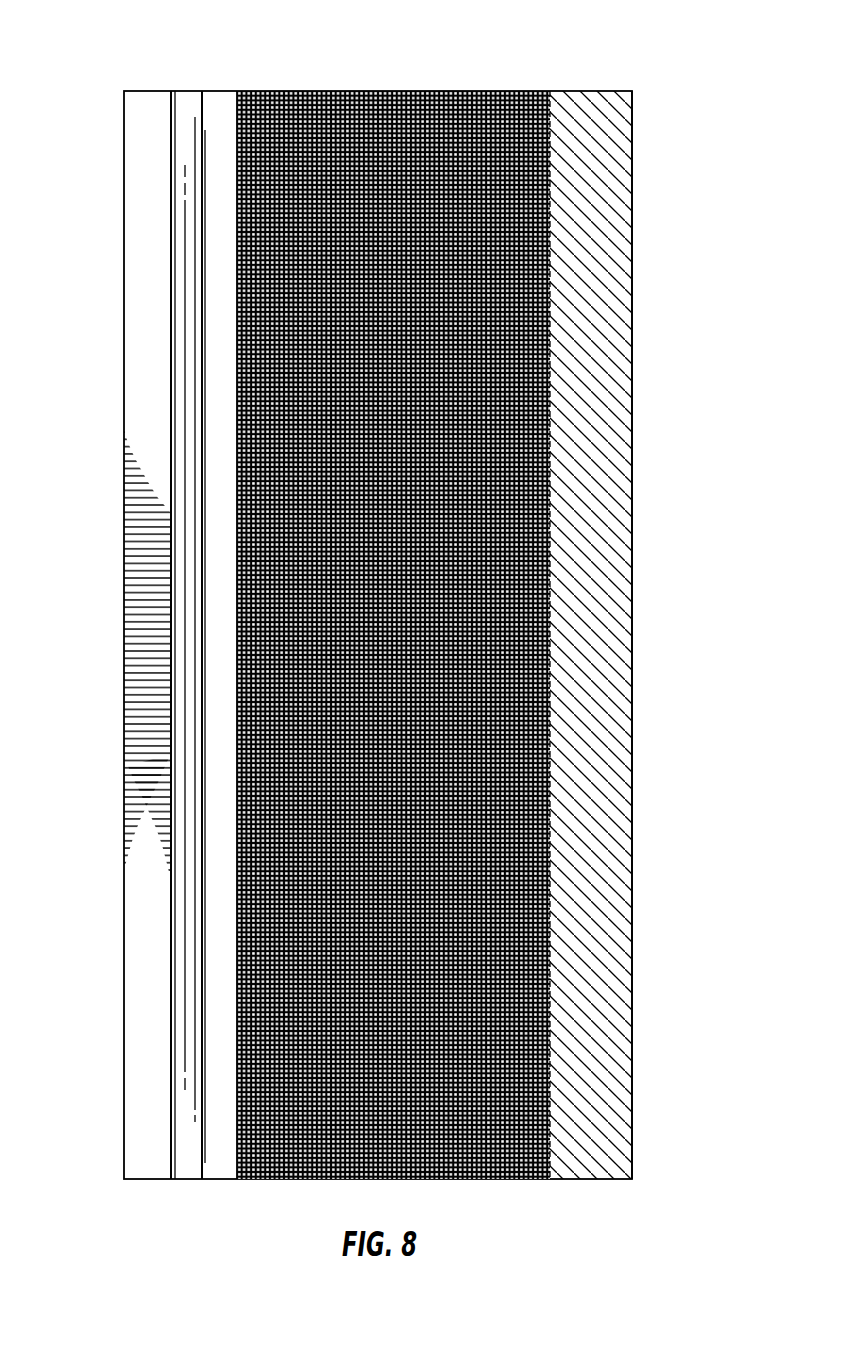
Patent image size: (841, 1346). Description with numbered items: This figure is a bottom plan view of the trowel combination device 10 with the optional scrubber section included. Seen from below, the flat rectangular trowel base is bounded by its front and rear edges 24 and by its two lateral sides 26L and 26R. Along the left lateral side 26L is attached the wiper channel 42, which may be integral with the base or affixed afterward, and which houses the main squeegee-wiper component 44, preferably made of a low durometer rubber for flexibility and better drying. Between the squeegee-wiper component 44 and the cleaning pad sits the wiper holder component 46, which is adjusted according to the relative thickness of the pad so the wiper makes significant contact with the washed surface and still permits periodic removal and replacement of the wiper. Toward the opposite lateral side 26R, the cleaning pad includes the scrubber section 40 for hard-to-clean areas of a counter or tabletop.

The device 10 is at (68, 1180).
The front and rear edges 24 is at (405, 92).
The left lateral side 26L is at (238, 702).
The right lateral side 26R is at (632, 628).
The scrubber section 40 is at (597, 432).
The wiper channel 42 is at (187, 108).
The squeegee-wiper component 44 is at (150, 377).
The wiper holder component 46 is at (205, 110).